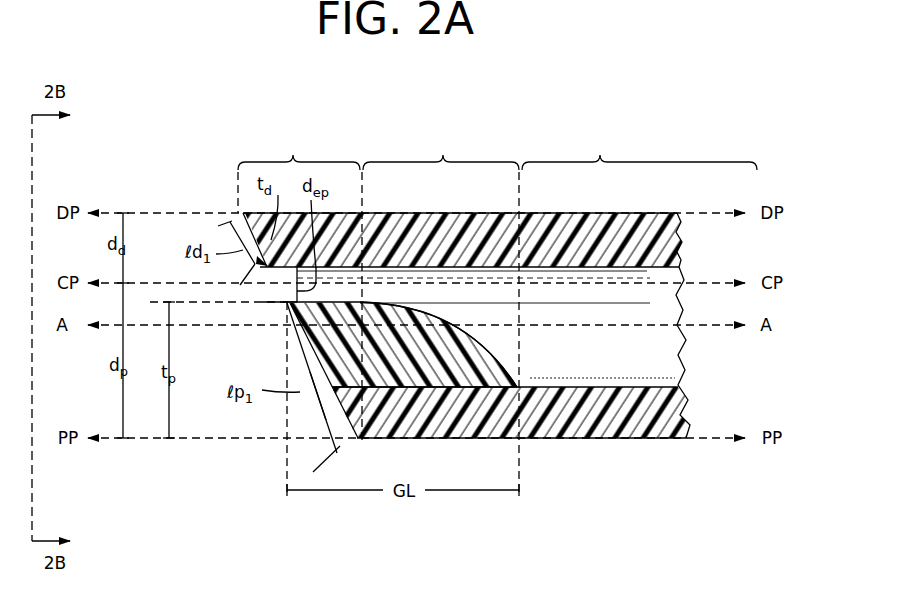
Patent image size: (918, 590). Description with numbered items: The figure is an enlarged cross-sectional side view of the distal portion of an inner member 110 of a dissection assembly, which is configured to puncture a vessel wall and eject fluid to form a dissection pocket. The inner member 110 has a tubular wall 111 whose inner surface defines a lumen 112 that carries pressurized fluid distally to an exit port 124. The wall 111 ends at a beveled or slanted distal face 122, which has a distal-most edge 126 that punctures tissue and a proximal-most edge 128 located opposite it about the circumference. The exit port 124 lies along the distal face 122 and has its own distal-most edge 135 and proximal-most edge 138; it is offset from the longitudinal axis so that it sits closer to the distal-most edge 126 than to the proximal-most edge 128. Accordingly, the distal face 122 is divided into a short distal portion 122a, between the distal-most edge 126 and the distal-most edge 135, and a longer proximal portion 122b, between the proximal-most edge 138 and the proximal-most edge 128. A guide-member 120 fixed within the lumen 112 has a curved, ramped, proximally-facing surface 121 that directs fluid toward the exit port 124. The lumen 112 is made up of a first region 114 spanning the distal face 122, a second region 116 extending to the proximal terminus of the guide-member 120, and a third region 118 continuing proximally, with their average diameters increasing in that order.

The inner member 110 is at (548, 96).
The tubular wall 111 is at (588, 421).
The lumen 112 is at (619, 363).
The first region 114 is at (299, 150).
The second region 116 is at (441, 150).
The third region 118 is at (639, 150).
The guide-member 120 is at (397, 357).
The curved, ramped, proximally-facing surface 121 is at (433, 314).
The distal face 122 is at (298, 350).
The distal portion 122a is at (229, 224).
The proximal portion 122b is at (314, 404).
The exit port 124 is at (279, 288).
The distal-most edge 126 is at (247, 212).
The proximal-most edge 128 is at (337, 451).
The distal-most edge of the exit port 135 is at (260, 262).
The proximal-most edge of the exit port 138 is at (281, 306).